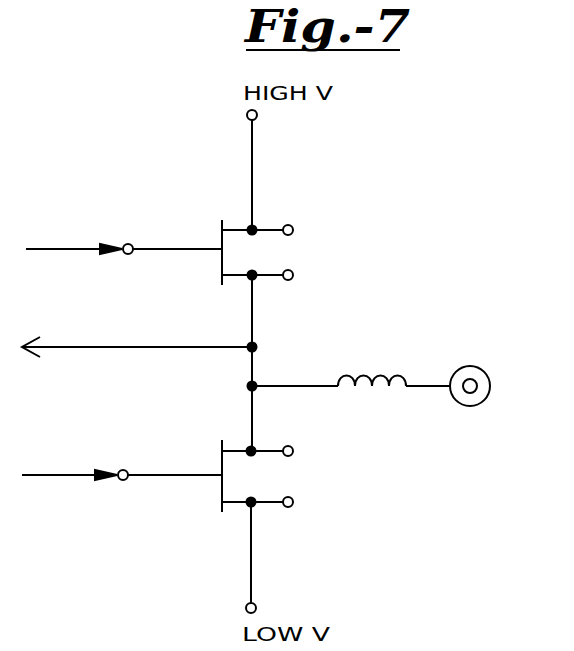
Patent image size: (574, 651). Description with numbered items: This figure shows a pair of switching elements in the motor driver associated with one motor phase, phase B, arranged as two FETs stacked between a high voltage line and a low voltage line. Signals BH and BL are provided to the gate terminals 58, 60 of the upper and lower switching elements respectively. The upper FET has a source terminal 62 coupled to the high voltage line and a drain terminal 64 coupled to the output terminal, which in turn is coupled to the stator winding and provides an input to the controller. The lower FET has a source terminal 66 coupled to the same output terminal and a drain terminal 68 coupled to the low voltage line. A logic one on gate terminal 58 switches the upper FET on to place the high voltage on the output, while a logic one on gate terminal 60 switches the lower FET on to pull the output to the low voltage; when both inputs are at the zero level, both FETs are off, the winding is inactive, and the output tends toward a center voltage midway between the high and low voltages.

The gate terminal 58 is at (130, 244).
The gate terminal 60 is at (123, 470).
The source terminal 62 is at (292, 226).
The drain terminal 64 is at (292, 279).
The source terminal 66 is at (292, 447).
The drain terminal 68 is at (291, 507).